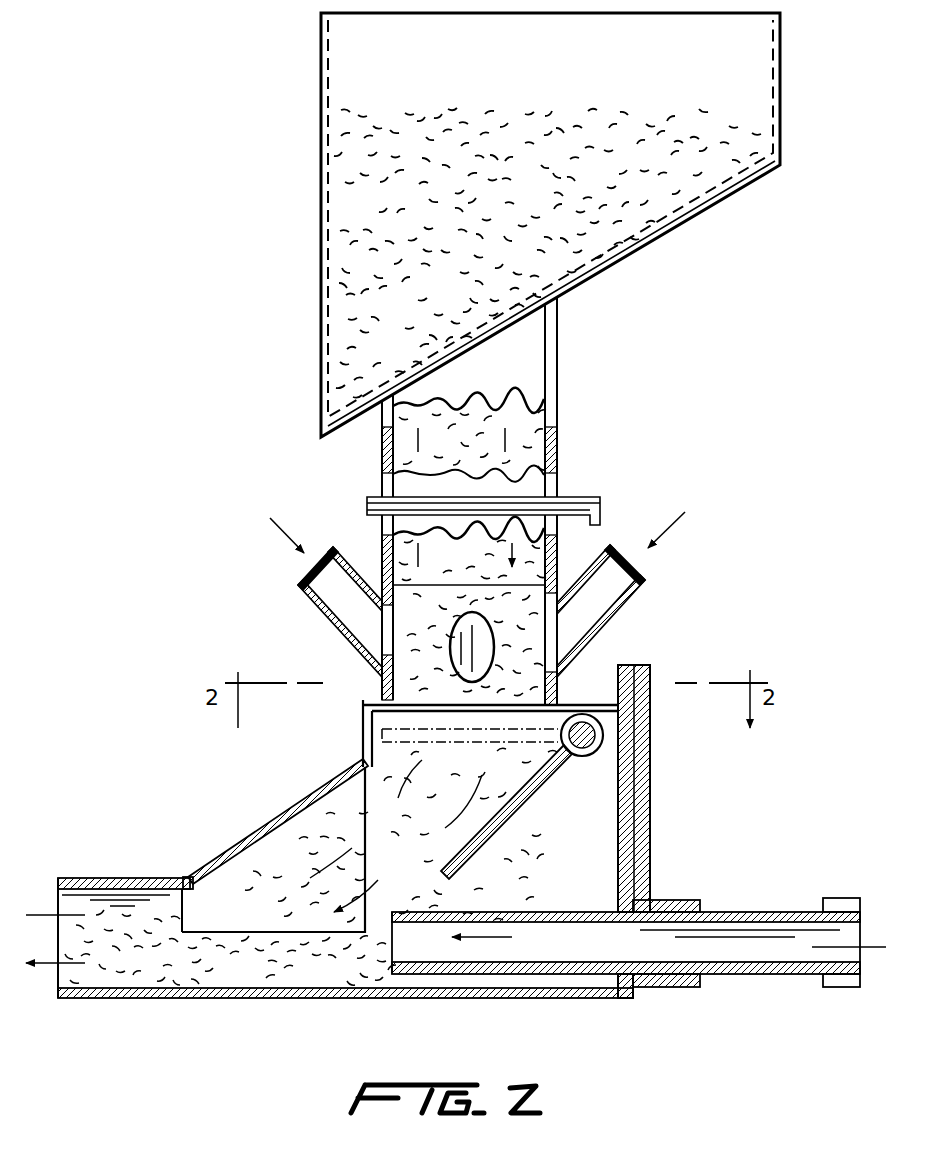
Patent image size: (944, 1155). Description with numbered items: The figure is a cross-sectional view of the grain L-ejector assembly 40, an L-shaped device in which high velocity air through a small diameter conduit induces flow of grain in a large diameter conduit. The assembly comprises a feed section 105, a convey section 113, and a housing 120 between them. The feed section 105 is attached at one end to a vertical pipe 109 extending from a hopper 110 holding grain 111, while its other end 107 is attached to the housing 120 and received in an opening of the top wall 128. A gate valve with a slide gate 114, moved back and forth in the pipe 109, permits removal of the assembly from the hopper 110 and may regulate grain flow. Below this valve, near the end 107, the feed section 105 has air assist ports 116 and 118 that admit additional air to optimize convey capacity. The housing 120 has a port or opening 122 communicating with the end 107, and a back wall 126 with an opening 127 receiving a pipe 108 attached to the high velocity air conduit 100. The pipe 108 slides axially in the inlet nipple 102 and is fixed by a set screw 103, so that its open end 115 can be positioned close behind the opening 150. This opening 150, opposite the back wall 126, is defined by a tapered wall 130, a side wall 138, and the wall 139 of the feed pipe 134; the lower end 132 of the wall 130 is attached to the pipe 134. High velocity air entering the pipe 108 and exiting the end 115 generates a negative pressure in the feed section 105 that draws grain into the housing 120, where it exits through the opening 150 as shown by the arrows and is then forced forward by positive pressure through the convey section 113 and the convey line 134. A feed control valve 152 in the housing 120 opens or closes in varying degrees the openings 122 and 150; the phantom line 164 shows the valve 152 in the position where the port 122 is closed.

The hopper 110 is at (320, 277).
The grain 111 is at (548, 201).
The vertical pipe 109 is at (557, 418).
The other end of feed section 107 is at (383, 690).
The port or opening 122 is at (486, 535).
The slide gate 114 is at (578, 500).
The feed section 105 is at (382, 540).
The air assist port 116 is at (298, 588).
The air assist port 118 is at (648, 595).
The grain L-ejector assembly 40 is at (640, 622).
The housing 120 is at (598, 815).
The phantom line 164 is at (468, 743).
The feed control valve 152 is at (532, 802).
The opening 150 is at (362, 872).
The top wall 128 is at (597, 695).
The back wall 126 is at (652, 792).
The pipe 108 is at (530, 962).
The opening 127 is at (617, 937).
The inlet nipple 102 is at (683, 900).
The set screw 103 is at (672, 987).
The conduit 100 is at (840, 987).
The open end 115 is at (392, 945).
The feed line or pipe 134 is at (120, 878).
The lower end of wall 132 is at (185, 877).
The tapered wall 130 is at (238, 842).
The convey section 113 is at (306, 783).
The side wall 138 is at (245, 915).
The wall of feed pipe 139 is at (288, 988).